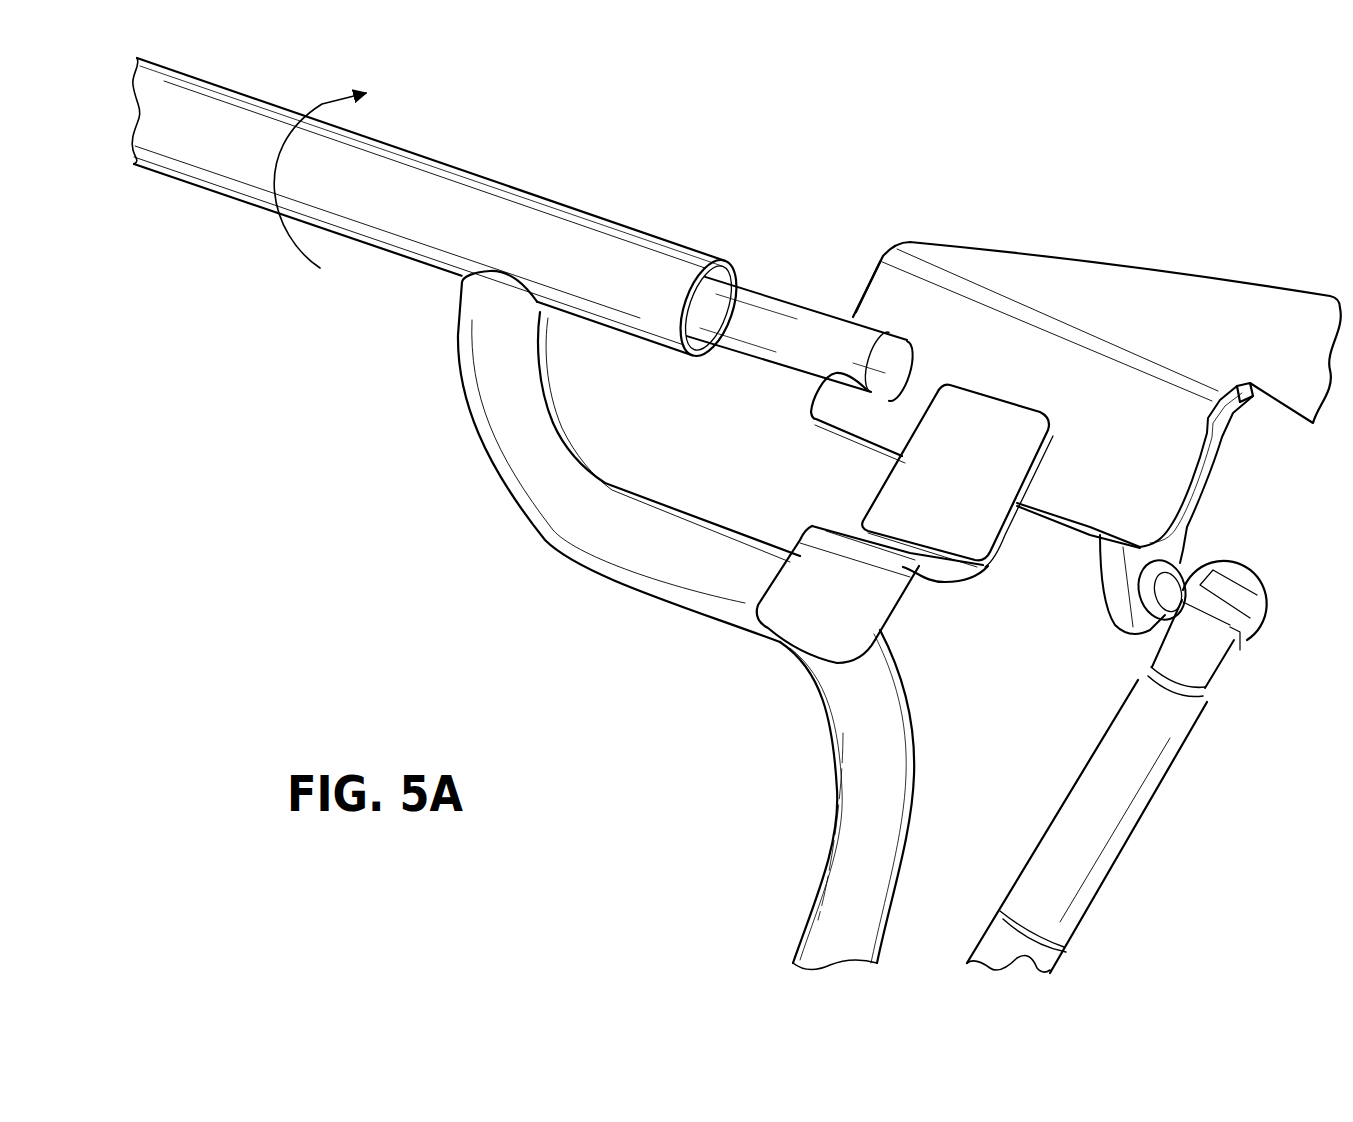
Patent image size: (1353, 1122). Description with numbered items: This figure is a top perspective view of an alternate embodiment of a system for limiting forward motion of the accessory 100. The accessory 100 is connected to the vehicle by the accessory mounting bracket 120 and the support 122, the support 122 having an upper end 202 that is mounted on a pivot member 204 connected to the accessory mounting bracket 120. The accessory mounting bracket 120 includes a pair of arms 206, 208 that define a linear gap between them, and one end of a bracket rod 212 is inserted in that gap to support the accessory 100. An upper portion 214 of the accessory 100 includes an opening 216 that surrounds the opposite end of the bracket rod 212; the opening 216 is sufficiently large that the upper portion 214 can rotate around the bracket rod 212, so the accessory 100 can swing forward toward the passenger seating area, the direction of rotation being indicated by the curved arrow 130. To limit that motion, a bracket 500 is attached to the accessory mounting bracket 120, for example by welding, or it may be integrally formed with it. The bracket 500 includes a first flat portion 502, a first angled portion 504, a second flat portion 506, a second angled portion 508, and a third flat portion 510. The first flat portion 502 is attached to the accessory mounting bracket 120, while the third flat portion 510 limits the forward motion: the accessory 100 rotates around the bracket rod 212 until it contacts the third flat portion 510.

The accessory 100 is at (456, 418).
The accessory mounting bracket 120 is at (1020, 246).
The support 122 is at (1140, 833).
The rotation direction 130 is at (290, 253).
The upper end 202 is at (1267, 608).
The pivot member 204 is at (1185, 578).
The arm 206 is at (833, 408).
The arm 208 is at (857, 300).
The bracket rod 212 is at (853, 320).
The upper portion 214 is at (467, 180).
The opening 216 is at (733, 270).
The bracket 500 is at (928, 530).
The first flat portion 502 is at (955, 473).
The first angled portion 504 is at (987, 567).
The second flat portion 506 is at (858, 529).
The second angled portion 508 is at (927, 572).
The third flat portion 510 is at (838, 594).